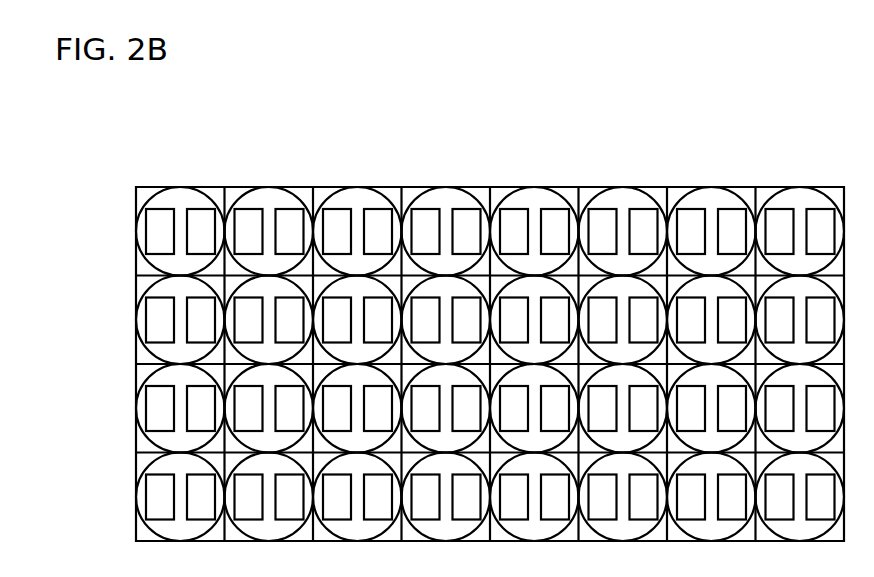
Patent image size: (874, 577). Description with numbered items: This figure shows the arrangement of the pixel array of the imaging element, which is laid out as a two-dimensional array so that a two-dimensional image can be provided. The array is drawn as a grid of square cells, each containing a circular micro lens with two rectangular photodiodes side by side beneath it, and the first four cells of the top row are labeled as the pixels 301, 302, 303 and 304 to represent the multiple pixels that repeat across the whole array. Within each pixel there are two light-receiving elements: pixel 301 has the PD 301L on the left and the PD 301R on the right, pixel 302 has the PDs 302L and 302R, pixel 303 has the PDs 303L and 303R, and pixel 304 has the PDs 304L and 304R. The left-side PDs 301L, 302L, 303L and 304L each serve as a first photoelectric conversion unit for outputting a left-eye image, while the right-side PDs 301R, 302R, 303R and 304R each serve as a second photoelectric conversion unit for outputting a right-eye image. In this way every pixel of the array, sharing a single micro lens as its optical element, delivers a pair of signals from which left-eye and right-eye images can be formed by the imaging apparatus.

The pixel 301 is at (142, 259).
The pixel 302 is at (243, 263).
The pixel 303 is at (330, 263).
The pixel 304 is at (417, 262).
The PD 301L is at (160, 209).
The PD 301R is at (201, 209).
The PD 302L is at (249, 209).
The PD 302R is at (289, 209).
The PD 303L is at (340, 209).
The PD 303R is at (381, 209).
The PD 304L is at (428, 209).
The PD 304R is at (467, 209).